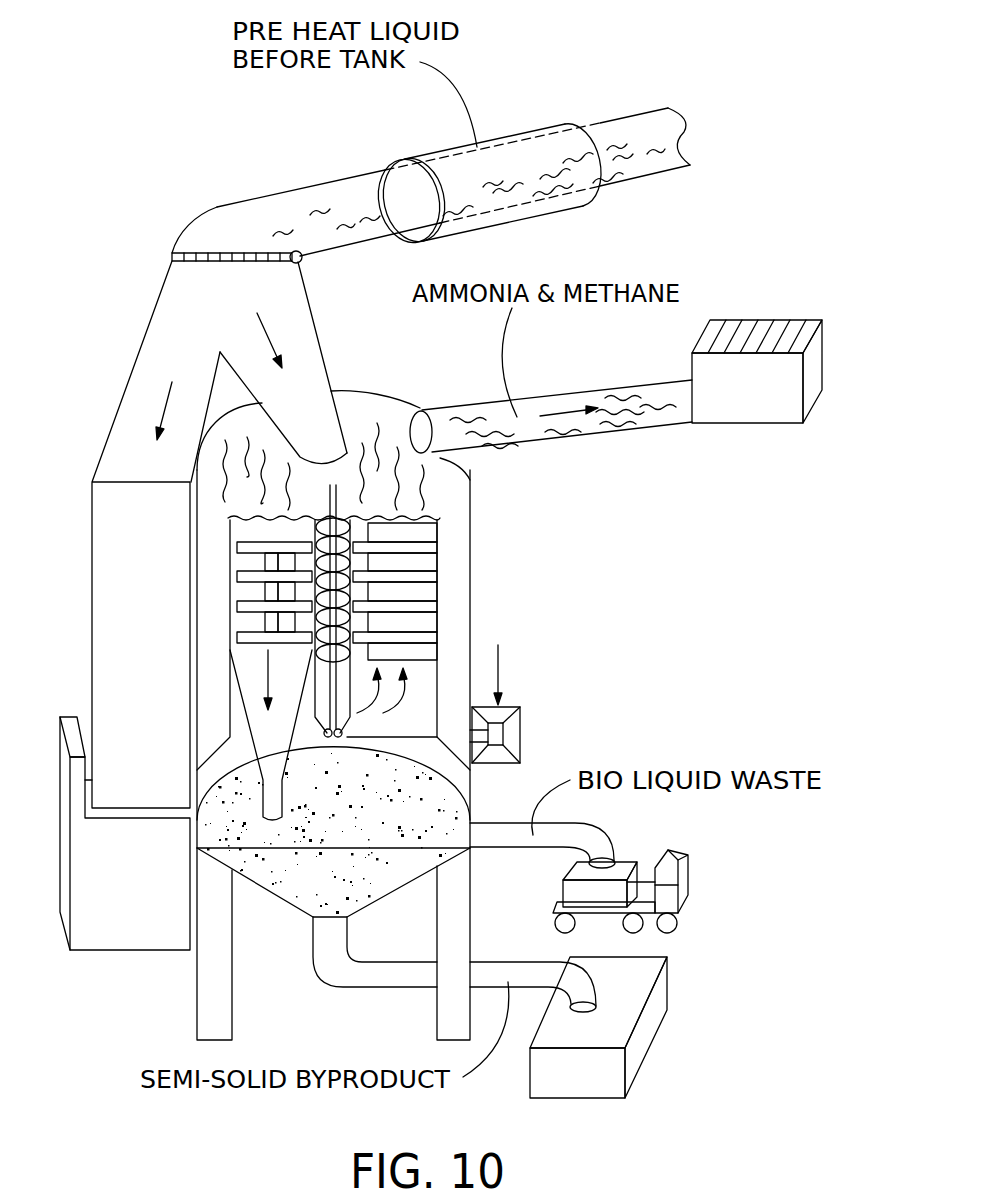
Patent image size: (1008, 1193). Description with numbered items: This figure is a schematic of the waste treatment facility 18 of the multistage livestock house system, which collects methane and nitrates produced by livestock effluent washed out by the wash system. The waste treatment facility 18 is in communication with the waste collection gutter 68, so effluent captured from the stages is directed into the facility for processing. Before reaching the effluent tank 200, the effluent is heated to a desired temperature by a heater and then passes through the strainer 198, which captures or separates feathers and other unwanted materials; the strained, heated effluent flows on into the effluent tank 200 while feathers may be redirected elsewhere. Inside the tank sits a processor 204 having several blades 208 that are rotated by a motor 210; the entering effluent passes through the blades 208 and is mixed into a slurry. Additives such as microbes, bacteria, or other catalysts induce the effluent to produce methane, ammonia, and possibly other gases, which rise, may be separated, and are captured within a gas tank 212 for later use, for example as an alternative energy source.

The waste treatment facility 18 is at (112, 161).
The strainer 198 is at (203, 255).
The waste collection gutter 68 is at (530, 167).
The effluent tank 200 is at (455, 567).
The blades 208 is at (418, 547).
The processor 204 is at (432, 622).
The motor 210 is at (513, 732).
The gas tank 212 is at (737, 412).